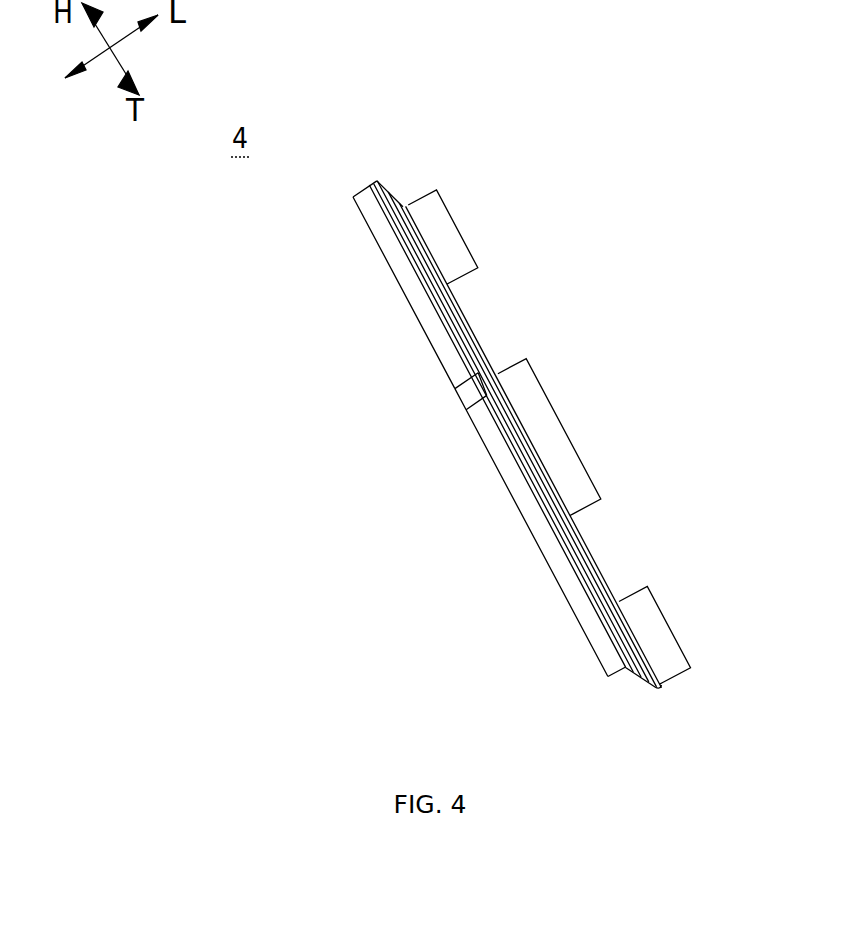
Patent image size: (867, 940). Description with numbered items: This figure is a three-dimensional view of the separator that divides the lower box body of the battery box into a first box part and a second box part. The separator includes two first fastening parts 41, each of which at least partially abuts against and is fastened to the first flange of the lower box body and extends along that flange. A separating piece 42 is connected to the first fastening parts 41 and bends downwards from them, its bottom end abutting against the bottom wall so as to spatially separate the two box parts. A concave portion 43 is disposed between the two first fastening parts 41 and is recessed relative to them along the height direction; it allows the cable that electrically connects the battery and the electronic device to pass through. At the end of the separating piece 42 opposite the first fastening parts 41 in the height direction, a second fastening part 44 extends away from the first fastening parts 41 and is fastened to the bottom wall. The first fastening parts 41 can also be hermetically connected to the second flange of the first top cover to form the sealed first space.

The first fastening part 41 is at (400, 267).
The separating piece 42 is at (403, 206).
The concave portion 43 is at (492, 427).
The second fastening part 44 is at (442, 221).